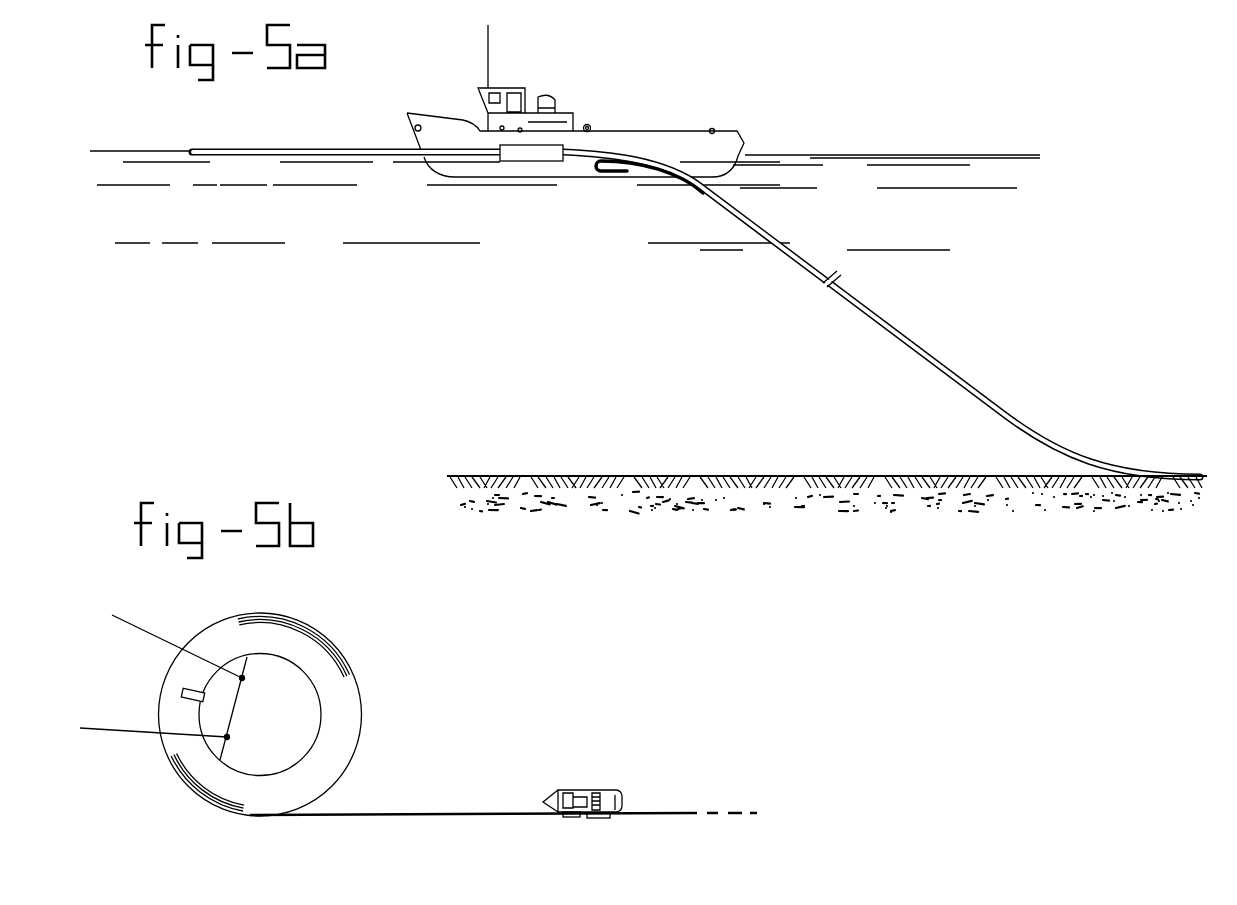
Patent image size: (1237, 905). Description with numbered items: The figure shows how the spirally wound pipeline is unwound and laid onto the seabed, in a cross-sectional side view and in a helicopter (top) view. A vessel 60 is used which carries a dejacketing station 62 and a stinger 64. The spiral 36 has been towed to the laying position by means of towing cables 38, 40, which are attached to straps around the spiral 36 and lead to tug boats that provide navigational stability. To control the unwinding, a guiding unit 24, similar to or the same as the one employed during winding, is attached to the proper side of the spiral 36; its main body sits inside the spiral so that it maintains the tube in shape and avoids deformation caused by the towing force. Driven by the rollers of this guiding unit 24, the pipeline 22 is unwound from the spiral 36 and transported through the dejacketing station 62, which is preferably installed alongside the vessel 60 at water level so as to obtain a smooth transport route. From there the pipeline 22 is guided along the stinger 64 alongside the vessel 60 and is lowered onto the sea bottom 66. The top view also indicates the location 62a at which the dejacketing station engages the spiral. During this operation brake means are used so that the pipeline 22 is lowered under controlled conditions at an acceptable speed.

In FIG. 5A, the pipeline 22 is at (900, 340).
In FIG. 5B, the pipeline 22 is at (448, 812).
In FIG. 5B, the guiding unit 24 is at (226, 703).
In FIG. 5B, the spiral 36 is at (354, 678).
In FIG. 5B, the towing cable 38 is at (142, 630).
In FIG. 5B, the towing cable 40 is at (115, 731).
In FIG. 5A, the vessel 60 is at (647, 135).
In FIG. 5B, the vessel 60 is at (605, 790).
In FIG. 5A, the dejacketing station 62 is at (538, 161).
In FIG. 5B, the dejacketing station 62 is at (567, 818).
In FIG. 5B, the pipe handling unit location 62a is at (182, 690).
In FIG. 5A, the stinger 64 is at (627, 173).
In FIG. 5B, the stinger 64 is at (612, 819).
In FIG. 5A, the sea bottom 66 is at (773, 486).